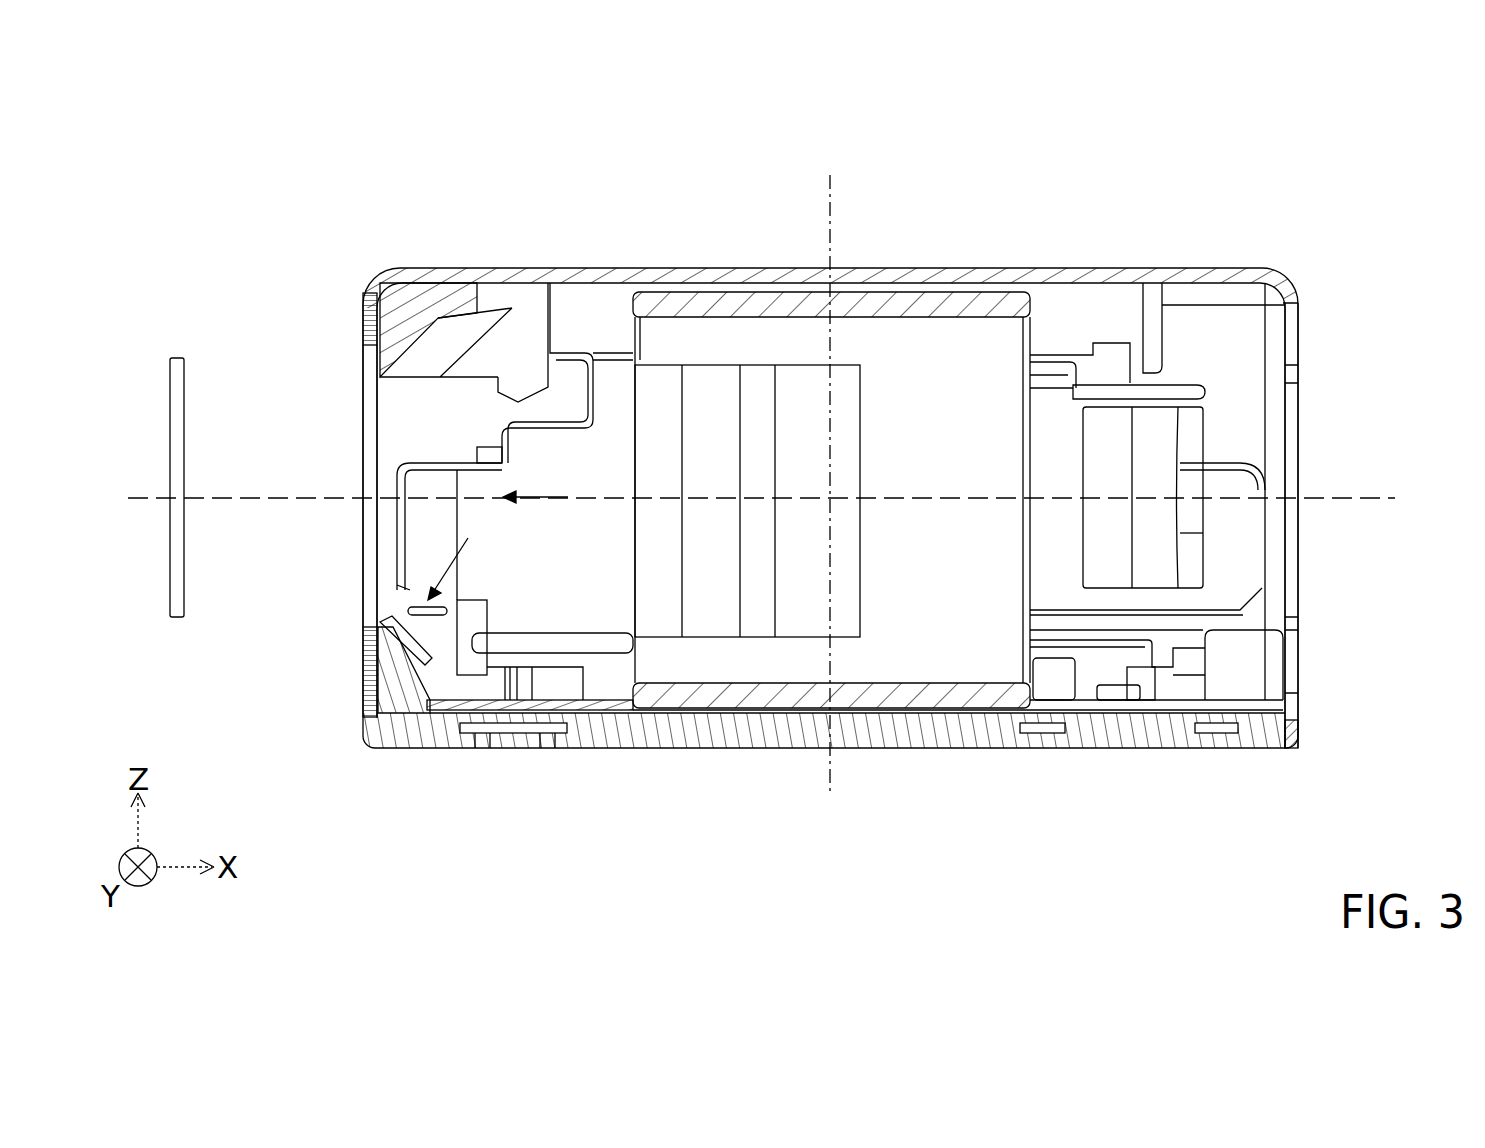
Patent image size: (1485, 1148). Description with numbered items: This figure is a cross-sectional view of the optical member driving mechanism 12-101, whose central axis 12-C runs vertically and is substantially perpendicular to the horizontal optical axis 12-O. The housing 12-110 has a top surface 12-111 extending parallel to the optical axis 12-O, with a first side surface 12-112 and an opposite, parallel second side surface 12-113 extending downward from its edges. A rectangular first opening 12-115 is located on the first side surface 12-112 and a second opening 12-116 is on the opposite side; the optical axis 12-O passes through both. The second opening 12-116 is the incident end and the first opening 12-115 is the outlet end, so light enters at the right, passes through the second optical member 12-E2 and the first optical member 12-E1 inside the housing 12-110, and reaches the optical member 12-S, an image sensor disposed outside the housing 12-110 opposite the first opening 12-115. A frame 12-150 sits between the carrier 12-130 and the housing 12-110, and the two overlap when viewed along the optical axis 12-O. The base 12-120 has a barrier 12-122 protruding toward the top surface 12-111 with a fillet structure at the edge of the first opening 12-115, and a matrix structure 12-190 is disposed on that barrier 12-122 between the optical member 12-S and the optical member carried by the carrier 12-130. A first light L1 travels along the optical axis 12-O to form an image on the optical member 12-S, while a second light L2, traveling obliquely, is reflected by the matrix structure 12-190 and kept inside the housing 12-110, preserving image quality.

The optical member driving mechanism 12-101 is at (212, 102).
The housing 12-110 is at (366, 297).
The top surface 12-111 is at (540, 290).
The first side surface 12-112 is at (372, 327).
The second side surface 12-113 is at (1300, 350).
The first opening 12-115 is at (368, 433).
The second opening 12-116 is at (1293, 440).
The base 12-120 is at (638, 748).
The barrier 12-122 is at (405, 690).
The carrier 12-130 is at (673, 340).
The frame 12-150 is at (410, 293).
The matrix structure 12-190 is at (380, 633).
The first optical member 12-E1 is at (798, 395).
The second optical member 12-E2 is at (1113, 440).
The central axis 12-C is at (831, 468).
The optical axis 12-O is at (796, 500).
The optical member (image sensor) 12-S is at (178, 360).
The first light L1 is at (539, 483).
The second light L2 is at (466, 562).